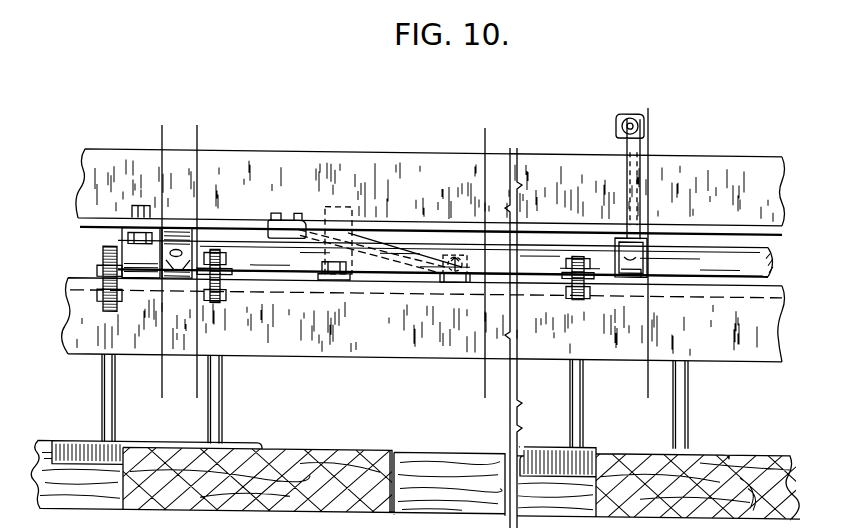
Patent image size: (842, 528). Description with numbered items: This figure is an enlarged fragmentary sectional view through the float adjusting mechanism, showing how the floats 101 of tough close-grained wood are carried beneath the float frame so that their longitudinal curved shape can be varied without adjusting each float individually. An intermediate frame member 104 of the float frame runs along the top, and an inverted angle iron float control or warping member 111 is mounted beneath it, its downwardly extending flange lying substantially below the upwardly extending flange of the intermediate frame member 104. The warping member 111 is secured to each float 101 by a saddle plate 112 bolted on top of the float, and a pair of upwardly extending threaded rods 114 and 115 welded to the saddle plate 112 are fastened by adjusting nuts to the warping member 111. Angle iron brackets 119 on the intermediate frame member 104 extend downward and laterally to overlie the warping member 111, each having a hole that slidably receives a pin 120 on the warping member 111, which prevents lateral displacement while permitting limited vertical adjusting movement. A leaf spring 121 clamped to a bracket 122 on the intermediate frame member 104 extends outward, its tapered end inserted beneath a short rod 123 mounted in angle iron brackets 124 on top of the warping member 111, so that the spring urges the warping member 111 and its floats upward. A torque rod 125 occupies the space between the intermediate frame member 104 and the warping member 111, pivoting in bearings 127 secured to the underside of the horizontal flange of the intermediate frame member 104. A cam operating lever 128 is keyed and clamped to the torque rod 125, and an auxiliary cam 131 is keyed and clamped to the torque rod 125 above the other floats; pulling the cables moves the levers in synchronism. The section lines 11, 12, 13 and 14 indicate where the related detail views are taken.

The float 101 is at (370, 458).
The intermediate frame member 104 is at (730, 172).
The float control or warping member 111 is at (370, 352).
The saddle plate 112 is at (720, 448).
The threaded rod 114 is at (578, 415).
The threaded rod 115 is at (683, 417).
The angle iron bracket 119 is at (335, 205).
The pin 120 is at (330, 280).
The leaf spring 121 is at (352, 232).
The bracket 122 is at (282, 227).
The short rod 123 is at (455, 256).
The angle iron bracket 124 is at (458, 280).
The torque rod 125 is at (760, 260).
The bearing 127 is at (135, 245).
The cam operating lever 128 is at (628, 146).
The auxiliary cam 131 is at (160, 240).
The section line 11 is at (197, 382).
The section line 12 is at (485, 388).
The section line 13 is at (648, 392).
The section line 14 is at (162, 382).